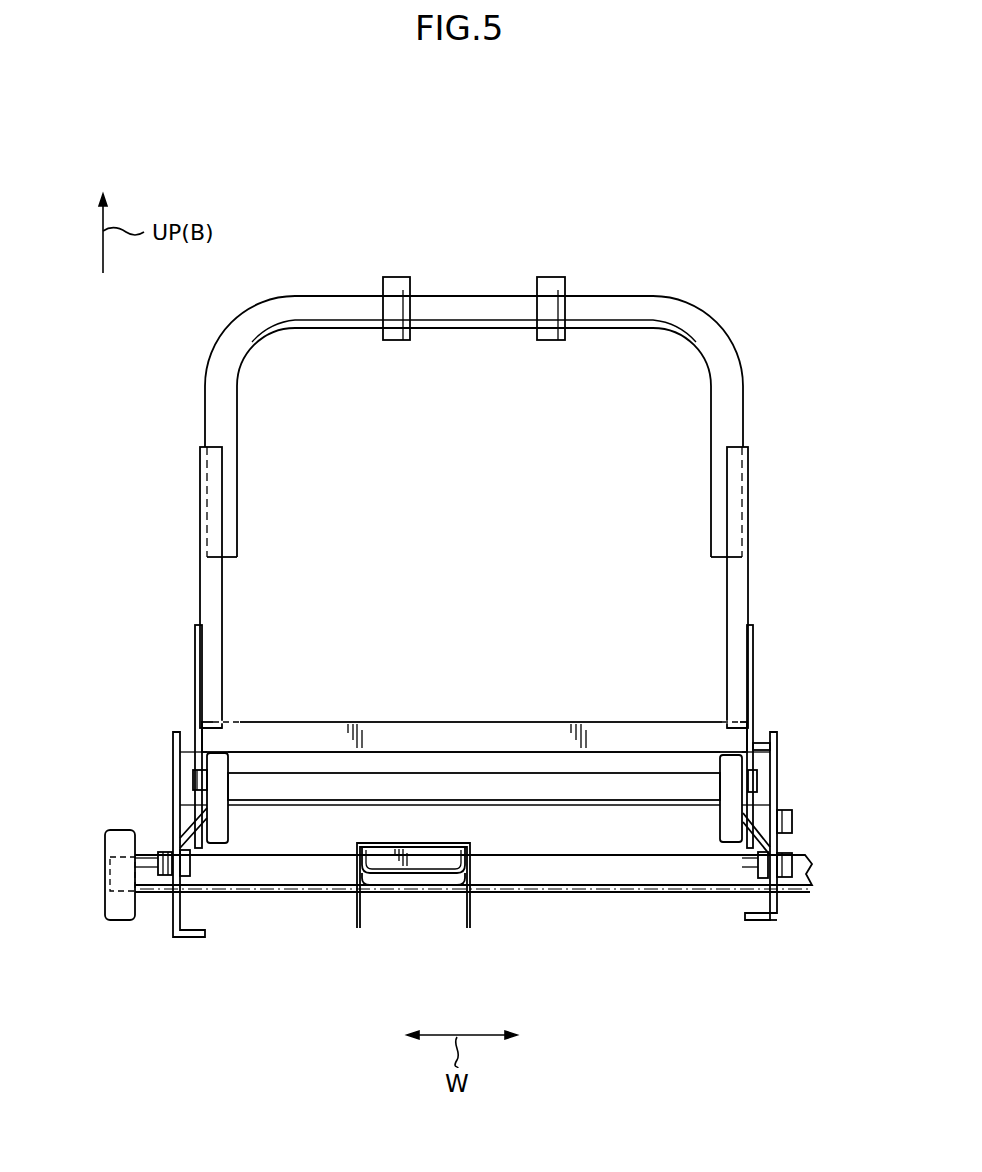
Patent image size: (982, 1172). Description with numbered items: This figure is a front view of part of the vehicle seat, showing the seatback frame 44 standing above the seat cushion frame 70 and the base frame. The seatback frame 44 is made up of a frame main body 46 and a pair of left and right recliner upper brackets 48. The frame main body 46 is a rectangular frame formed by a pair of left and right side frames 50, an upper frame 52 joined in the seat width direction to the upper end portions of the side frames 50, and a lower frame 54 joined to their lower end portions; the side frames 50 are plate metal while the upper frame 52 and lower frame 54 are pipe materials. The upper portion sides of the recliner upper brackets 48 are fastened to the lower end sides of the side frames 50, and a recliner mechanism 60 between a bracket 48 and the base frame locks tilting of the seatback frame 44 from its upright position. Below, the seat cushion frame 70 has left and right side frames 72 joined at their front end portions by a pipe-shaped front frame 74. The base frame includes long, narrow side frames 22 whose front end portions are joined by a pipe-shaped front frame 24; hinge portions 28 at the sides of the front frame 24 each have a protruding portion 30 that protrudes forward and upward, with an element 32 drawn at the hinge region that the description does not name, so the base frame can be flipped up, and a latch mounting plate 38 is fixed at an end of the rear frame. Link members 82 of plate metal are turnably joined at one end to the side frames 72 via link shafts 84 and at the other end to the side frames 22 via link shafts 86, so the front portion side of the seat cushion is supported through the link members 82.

The side frame 22 is at (185, 942).
The front frame 24 is at (630, 893).
The hinge portion 28 is at (432, 885).
The protruding portion 30 is at (357, 908).
The tray 32 is at (385, 877).
The latch mounting plate 38 is at (113, 922).
The seatback frame 44 is at (592, 258).
The frame main body 46 is at (664, 288).
The recliner upper bracket 48 is at (195, 650).
The side frame 50 is at (222, 592).
The upper frame 52 is at (452, 295).
The lower frame 54 is at (395, 722).
The recliner mechanism 60 is at (757, 743).
The seat cushion frame 70 is at (607, 764).
The side frame 72 is at (228, 765).
The front frame 74 is at (536, 775).
The link member 82 is at (188, 803).
The link shaft 84 is at (196, 780).
The link shaft 86 is at (170, 850).